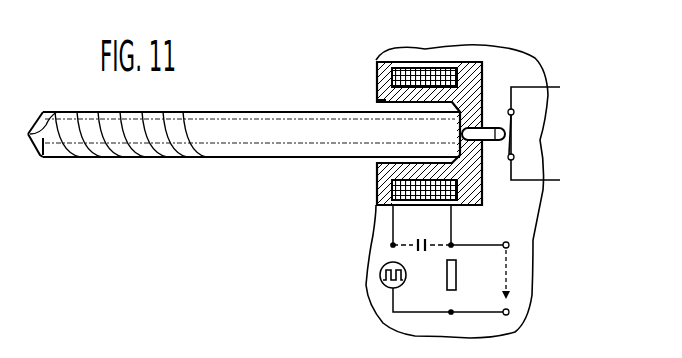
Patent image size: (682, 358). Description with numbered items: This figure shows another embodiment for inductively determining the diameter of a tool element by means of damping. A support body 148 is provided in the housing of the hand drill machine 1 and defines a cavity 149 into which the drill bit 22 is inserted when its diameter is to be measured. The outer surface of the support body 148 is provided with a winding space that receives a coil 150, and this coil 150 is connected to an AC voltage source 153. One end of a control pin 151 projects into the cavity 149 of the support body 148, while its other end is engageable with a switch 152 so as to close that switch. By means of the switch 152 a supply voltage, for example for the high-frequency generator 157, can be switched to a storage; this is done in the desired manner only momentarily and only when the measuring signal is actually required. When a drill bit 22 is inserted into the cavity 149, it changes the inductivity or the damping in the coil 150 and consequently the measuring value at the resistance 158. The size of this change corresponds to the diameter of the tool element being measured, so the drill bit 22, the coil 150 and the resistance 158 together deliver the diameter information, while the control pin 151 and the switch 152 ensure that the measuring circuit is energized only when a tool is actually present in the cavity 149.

The hand drill machine 1 is at (510, 224).
The drill bit 22 is at (302, 133).
The support body 148 is at (470, 80).
The cavity 149 is at (377, 100).
The coil 150 is at (424, 72).
The control pin 151 is at (492, 145).
The switch 152 is at (510, 140).
The AC voltage source 153 is at (382, 299).
The high-frequency generator 157 is at (380, 274).
The resistance 158 is at (456, 273).